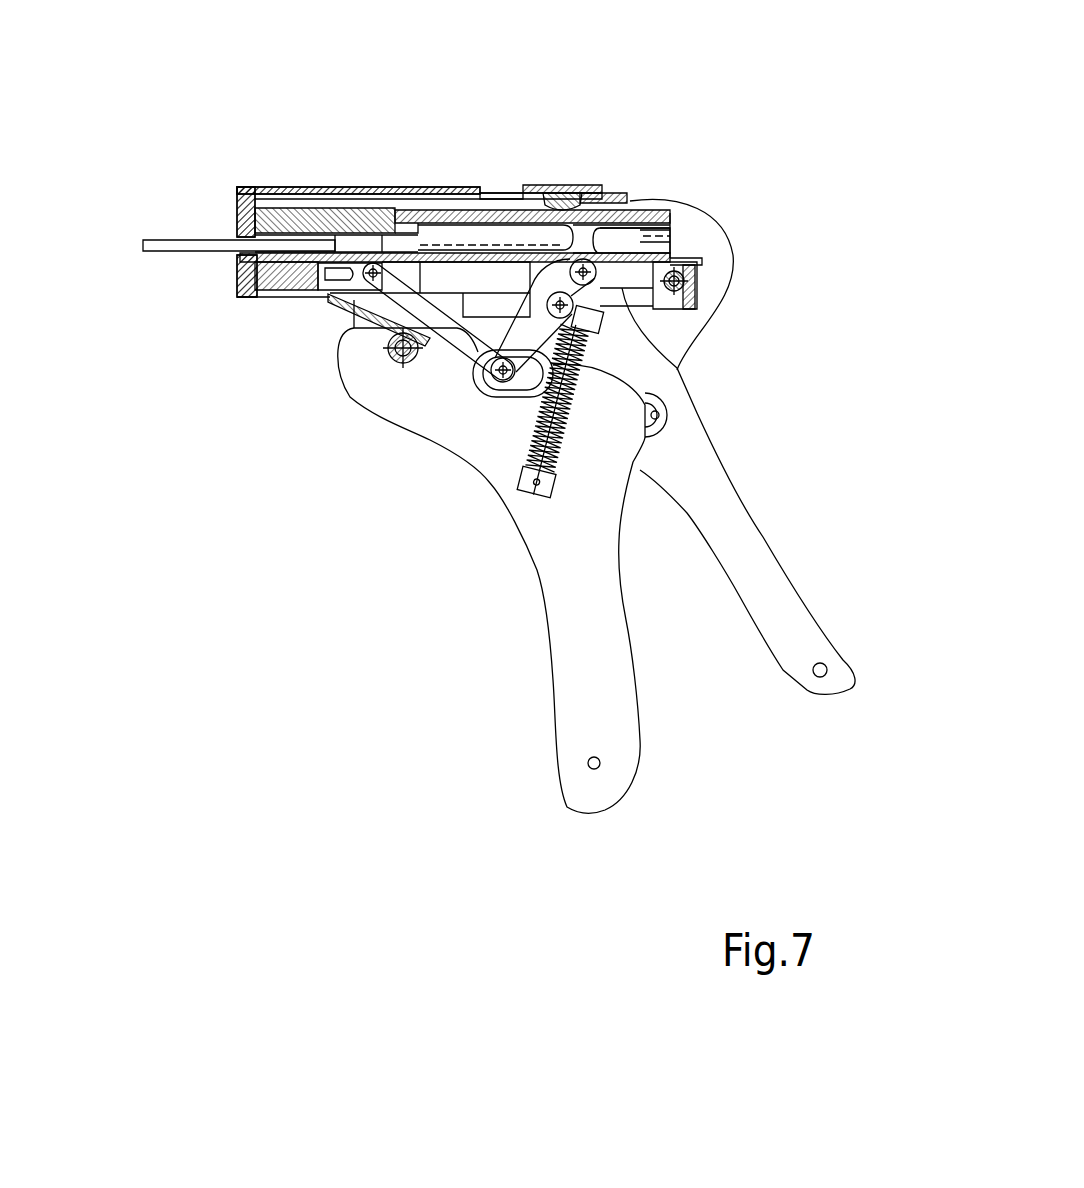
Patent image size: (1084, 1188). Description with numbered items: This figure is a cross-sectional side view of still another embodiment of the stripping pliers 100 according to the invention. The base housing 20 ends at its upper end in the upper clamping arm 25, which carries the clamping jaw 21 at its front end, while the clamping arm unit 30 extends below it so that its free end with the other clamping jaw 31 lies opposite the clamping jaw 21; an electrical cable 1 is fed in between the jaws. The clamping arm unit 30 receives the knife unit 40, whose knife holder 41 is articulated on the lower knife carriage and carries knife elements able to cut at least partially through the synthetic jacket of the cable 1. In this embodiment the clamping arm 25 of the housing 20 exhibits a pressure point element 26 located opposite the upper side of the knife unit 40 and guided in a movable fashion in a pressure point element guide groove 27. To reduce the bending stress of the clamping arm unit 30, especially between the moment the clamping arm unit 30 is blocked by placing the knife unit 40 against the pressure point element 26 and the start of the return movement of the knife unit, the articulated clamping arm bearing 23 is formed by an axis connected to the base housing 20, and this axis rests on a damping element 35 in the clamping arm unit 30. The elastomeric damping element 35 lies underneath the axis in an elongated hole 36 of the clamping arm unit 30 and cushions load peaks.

The stripping pliers 100 is at (132, 96).
The electrical cable 1 is at (143, 241).
The clamping jaw 21 is at (237, 230).
The clamping jaw 31 is at (237, 270).
The upper clamping arm 25 is at (306, 187).
The knife unit 40 is at (462, 169).
The knife holder 41 is at (427, 210).
The pressure point element guide groove 27 is at (503, 190).
The pressure point element 26 is at (563, 185).
The base housing 20 is at (617, 204).
The damping element 35 is at (633, 245).
The articulated clamping arm bearing 23 is at (697, 268).
The elongated hole 36 is at (670, 295).
The clamping arm unit 30 is at (677, 357).